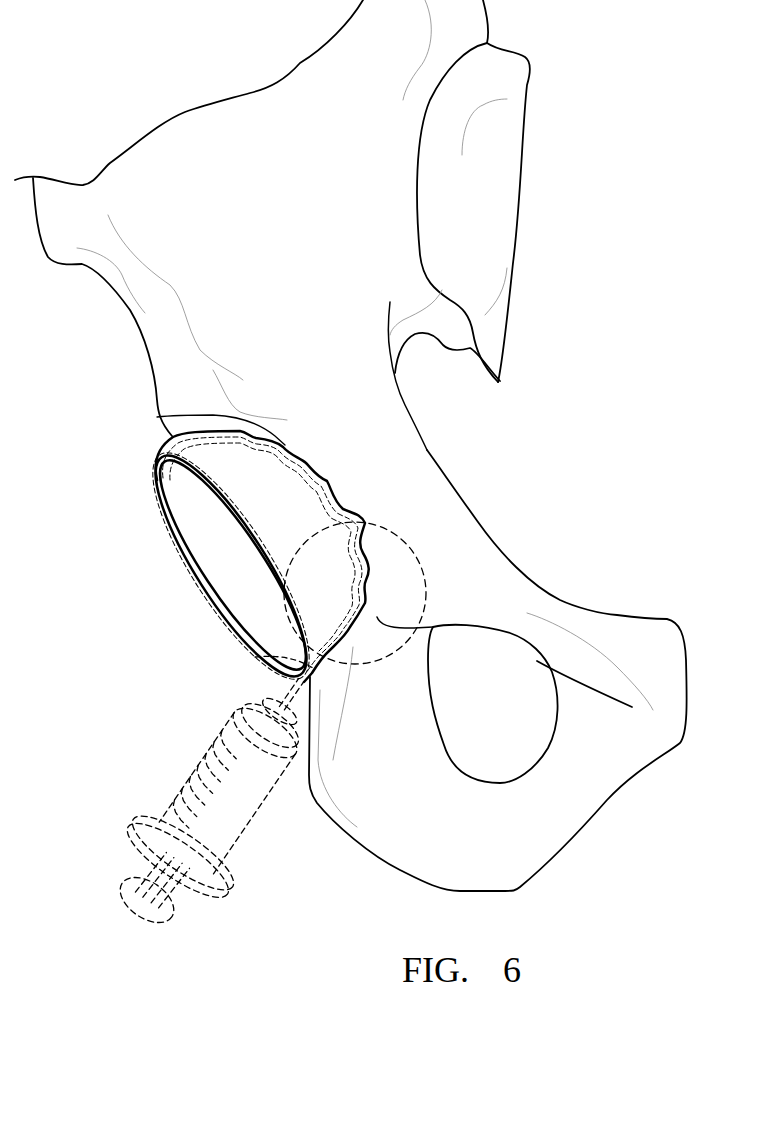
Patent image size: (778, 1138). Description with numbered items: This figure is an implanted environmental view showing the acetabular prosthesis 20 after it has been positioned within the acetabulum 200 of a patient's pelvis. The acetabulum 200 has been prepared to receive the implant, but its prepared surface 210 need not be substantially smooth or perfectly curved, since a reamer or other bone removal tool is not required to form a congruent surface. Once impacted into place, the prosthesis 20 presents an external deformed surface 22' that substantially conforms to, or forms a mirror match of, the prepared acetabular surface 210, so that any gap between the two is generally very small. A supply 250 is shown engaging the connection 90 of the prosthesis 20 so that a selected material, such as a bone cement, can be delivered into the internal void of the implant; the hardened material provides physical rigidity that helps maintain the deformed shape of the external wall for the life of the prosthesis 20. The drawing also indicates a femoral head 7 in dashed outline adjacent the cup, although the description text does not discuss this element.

The femoral head 7 is at (393, 527).
The acetabular prosthesis 20 is at (172, 550).
The external deformed surface 22' is at (192, 429).
The connection 90 is at (255, 657).
The acetabulum 200 is at (348, 466).
The prepared surface 210 is at (320, 485).
The supply 250 is at (158, 777).